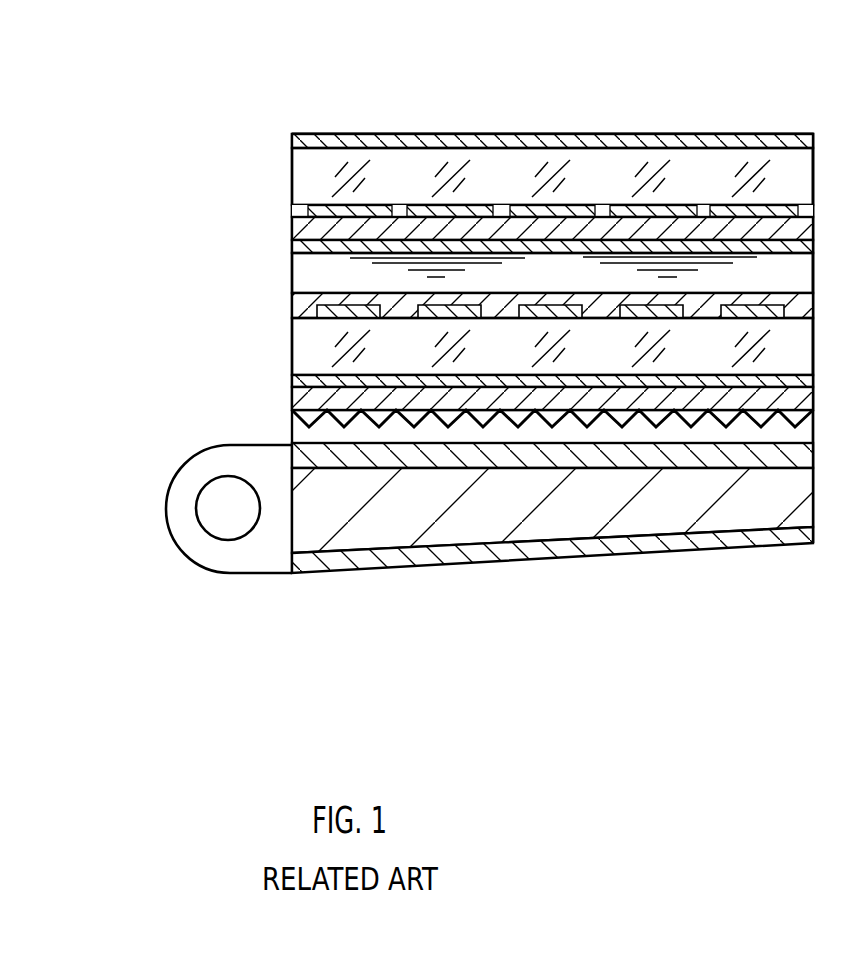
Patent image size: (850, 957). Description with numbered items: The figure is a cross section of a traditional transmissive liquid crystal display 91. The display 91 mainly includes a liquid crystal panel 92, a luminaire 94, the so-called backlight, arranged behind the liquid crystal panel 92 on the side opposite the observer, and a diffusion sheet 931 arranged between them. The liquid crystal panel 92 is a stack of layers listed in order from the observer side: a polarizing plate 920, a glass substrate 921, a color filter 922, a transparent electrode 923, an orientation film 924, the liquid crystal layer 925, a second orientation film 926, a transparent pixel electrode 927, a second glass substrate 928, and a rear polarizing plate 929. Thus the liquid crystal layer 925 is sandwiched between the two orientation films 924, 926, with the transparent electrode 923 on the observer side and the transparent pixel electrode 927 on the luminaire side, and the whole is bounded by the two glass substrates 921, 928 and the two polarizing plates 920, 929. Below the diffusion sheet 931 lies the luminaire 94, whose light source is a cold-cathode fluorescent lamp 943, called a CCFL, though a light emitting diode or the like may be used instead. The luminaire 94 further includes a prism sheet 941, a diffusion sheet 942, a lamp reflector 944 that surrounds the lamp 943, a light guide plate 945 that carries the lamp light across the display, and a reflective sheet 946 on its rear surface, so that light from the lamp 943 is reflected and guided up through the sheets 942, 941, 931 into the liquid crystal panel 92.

The liquid crystal display 91 is at (679, 68).
The liquid crystal panel 92 is at (193, 92).
The polarizing plate 920 is at (292, 137).
The glass substrate 921 is at (312, 167).
The color filter 922 is at (300, 197).
The transparent electrode 923 is at (303, 210).
The orientation film 924 is at (303, 226).
The liquid crystal layer 925 is at (307, 267).
The orientation film 926 is at (295, 300).
The transparent pixel electrode 927 is at (300, 300).
The glass substrate 928 is at (310, 335).
The polarizing plate 929 is at (297, 382).
The diffusion sheet 931 is at (307, 398).
The luminaire 94 is at (76, 420).
The prism sheet 941 is at (305, 427).
The diffusion sheet 942 is at (308, 455).
The cold-cathode fluorescent lamp 943 is at (222, 504).
The lamp reflector 944 is at (166, 515).
The light guide plate 945 is at (312, 520).
The reflective sheet 946 is at (307, 562).